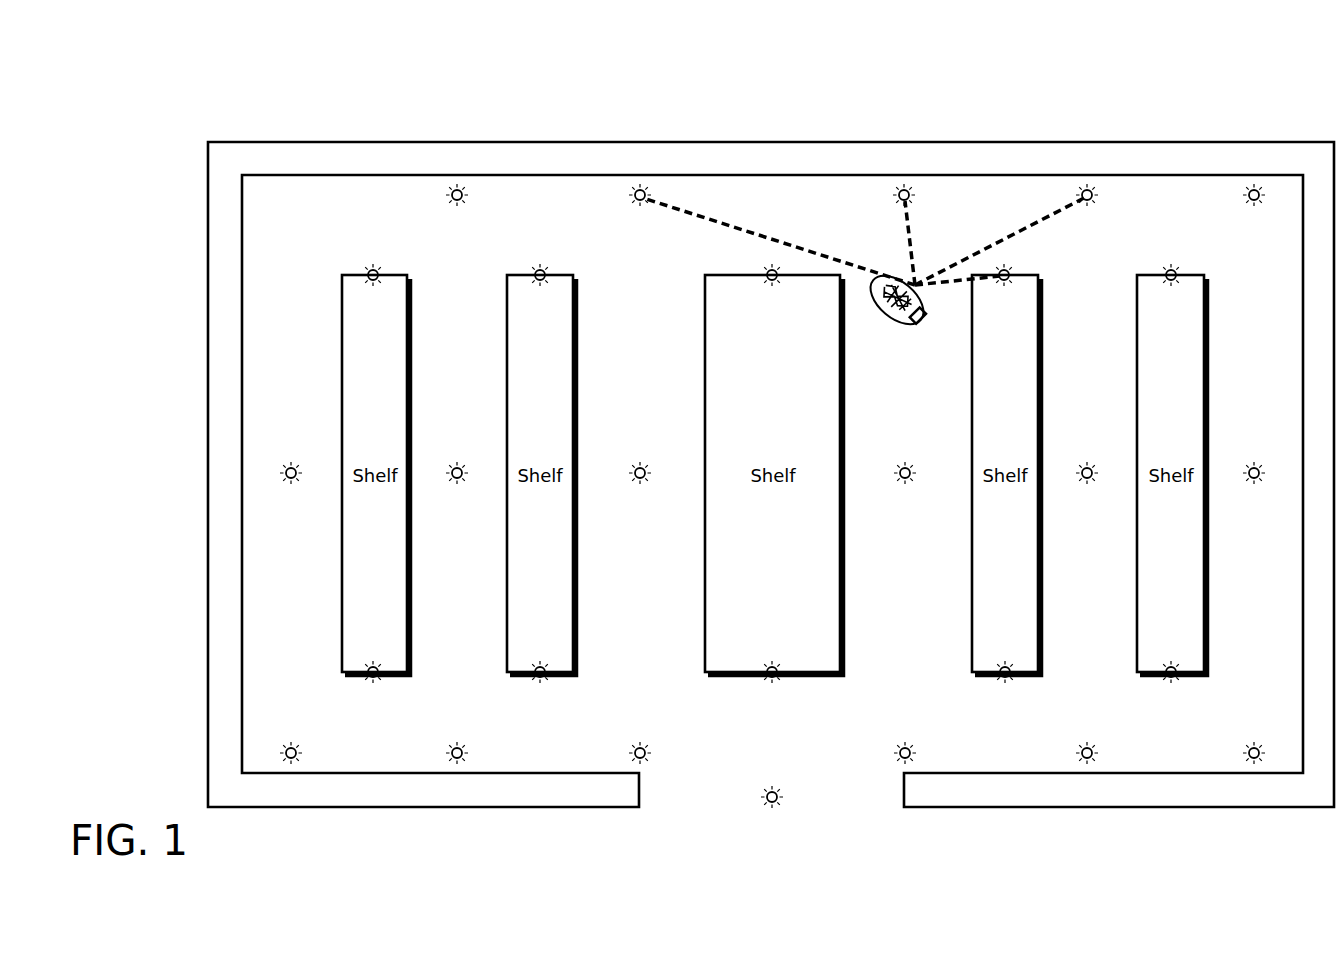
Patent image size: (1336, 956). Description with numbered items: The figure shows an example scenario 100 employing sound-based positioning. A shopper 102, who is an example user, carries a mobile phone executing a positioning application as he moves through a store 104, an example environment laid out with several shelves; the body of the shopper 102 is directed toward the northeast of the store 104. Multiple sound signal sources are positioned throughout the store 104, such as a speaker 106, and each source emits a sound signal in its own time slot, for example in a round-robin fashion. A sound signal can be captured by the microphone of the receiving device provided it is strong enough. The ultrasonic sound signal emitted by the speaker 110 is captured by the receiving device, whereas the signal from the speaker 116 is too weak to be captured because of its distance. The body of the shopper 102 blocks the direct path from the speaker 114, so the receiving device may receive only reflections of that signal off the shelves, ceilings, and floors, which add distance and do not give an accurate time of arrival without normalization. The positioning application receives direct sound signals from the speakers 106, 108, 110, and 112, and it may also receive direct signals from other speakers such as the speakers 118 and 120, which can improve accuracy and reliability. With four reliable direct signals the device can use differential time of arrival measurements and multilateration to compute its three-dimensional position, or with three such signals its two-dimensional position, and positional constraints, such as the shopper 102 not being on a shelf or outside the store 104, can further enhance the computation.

The scenario 100 is at (268, 88).
The shopper 102 is at (900, 329).
The store 104 is at (207, 335).
The speaker 106 is at (1098, 195).
The speaker 108 is at (915, 196).
The speaker 110 is at (643, 203).
The speaker 112 is at (1010, 279).
The speaker 114 is at (905, 482).
The speaker 116 is at (291, 482).
The speaker 118 is at (1178, 280).
The speaker 120 is at (1253, 205).